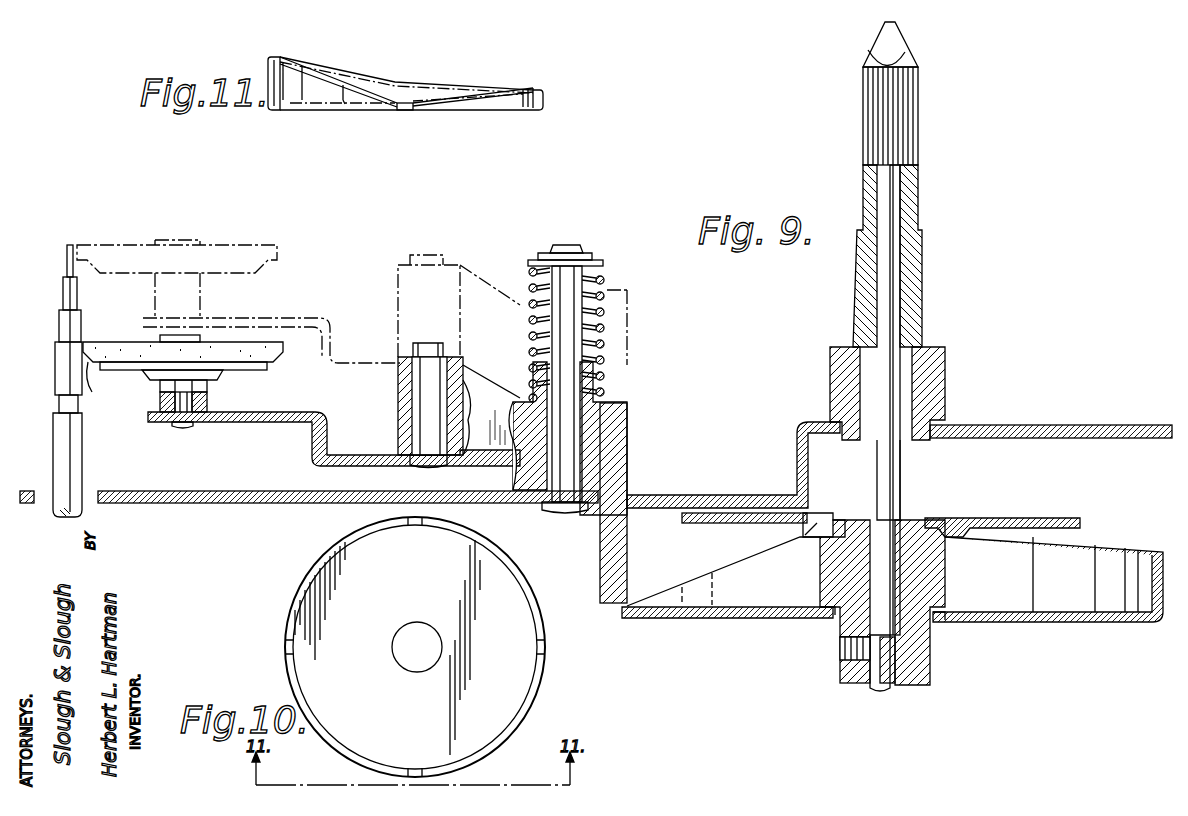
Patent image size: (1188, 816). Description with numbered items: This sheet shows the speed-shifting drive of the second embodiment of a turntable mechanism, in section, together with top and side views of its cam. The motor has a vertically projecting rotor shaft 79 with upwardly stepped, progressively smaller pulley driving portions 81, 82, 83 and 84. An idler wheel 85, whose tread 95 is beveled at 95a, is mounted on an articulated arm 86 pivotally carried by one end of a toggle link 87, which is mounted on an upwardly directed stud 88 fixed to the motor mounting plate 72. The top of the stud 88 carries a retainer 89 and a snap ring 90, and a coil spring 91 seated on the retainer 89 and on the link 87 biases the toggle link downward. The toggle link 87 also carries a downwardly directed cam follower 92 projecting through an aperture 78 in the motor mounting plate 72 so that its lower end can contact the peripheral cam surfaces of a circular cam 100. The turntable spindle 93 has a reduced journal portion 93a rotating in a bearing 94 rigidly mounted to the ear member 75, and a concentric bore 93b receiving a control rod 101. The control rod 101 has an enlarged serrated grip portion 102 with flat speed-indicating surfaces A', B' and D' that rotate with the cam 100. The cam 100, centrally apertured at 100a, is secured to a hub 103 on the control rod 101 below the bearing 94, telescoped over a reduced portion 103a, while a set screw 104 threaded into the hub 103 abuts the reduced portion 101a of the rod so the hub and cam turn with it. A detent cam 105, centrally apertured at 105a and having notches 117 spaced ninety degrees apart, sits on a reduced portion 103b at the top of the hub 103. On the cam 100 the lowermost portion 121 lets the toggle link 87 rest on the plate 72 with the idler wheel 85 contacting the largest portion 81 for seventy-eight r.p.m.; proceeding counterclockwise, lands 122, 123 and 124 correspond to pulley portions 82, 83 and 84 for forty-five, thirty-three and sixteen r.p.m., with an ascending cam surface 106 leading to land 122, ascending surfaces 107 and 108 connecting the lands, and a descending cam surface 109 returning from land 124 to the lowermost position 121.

In FIG. 9, the motor mounting plate 72 is at (262, 504).
In FIG. 9, the ear member 75 is at (993, 426).
In FIG. 9, the aperture 78 is at (636, 496).
In FIG. 9, the rotor shaft 79 is at (82, 456).
In FIG. 9, the pulley driving portion 81 is at (55, 371).
In FIG. 9, the pulley driving portion 82 is at (59, 327).
In FIG. 9, the pulley driving portion 83 is at (63, 293).
In FIG. 9, the pulley driving portion 84 is at (66, 255).
In FIG. 9, the idler wheel 85 is at (245, 372).
In FIG. 9, the articulated arm 86 is at (312, 428).
In FIG. 9, the toggle link 87 is at (623, 428).
In FIG. 9, the stud 88 is at (572, 395).
In FIG. 9, the retainer 89 is at (600, 262).
In FIG. 9, the snap ring 90 is at (585, 253).
In FIG. 9, the coil spring 91 is at (607, 300).
In FIG. 9, the cam follower 92 is at (610, 548).
In FIG. 9, the turntable spindle 93 is at (912, 247).
In FIG. 9, the journal portion 93a is at (946, 376).
In FIG. 9, the concentric bore 93b is at (897, 300).
In FIG. 9, the bearing 94 is at (836, 370).
In FIG. 9, the idler wheel tread 95 is at (283, 346).
In FIG. 9, the bevel 95a is at (90, 380).
In FIG. 9, the circular cam 100 is at (1075, 624).
In FIG. 10, the central aperture 100a is at (420, 628).
In FIG. 9, the central aperture 100a is at (940, 622).
In FIG. 9, the control rod 101 is at (876, 271).
In FIG. 9, the reduced portion 101a is at (895, 660).
In FIG. 9, the grip portion 102 is at (910, 107).
In FIG. 9, the hub 103 is at (940, 567).
In FIG. 9, the reduced portion 103a is at (832, 620).
In FIG. 9, the reduced portion 103b is at (937, 524).
In FIG. 9, the set screw 104 is at (845, 657).
In FIG. 9, the detent cam 105 is at (1015, 518).
In FIG. 9, the central aperture 105a is at (836, 516).
In FIG. 11, the ascending cam surface 106 is at (484, 94).
In FIG. 10, the ascending cam surface 106 is at (538, 704).
In FIG. 11, the ascending cam surface 107 is at (450, 82).
In FIG. 10, the ascending cam surface 107 is at (505, 560).
In FIG. 11, the ascending cam surface 108 is at (323, 68).
In FIG. 10, the ascending cam surface 108 is at (336, 542).
In FIG. 11, the descending cam surface 109 is at (358, 82).
In FIG. 10, the descending cam surface 109 is at (322, 728).
In FIG. 9, the notches 117 is at (1076, 518).
In FIG. 11, the lowermost cam portion 121 is at (405, 108).
In FIG. 10, the lowermost cam portion 121 is at (412, 768).
In FIG. 11, the land 122 is at (540, 88).
In FIG. 10, the land 122 is at (540, 648).
In FIG. 11, the land 123 is at (402, 80).
In FIG. 10, the land 123 is at (418, 527).
In FIG. 11, the land 124 is at (276, 60).
In FIG. 10, the land 124 is at (286, 644).
In FIG. 9, the speed indicating surface D' is at (857, 37).
In FIG. 9, the speed indicating surface B' is at (924, 33).
In FIG. 9, the speed indicating surface A' is at (934, 51).